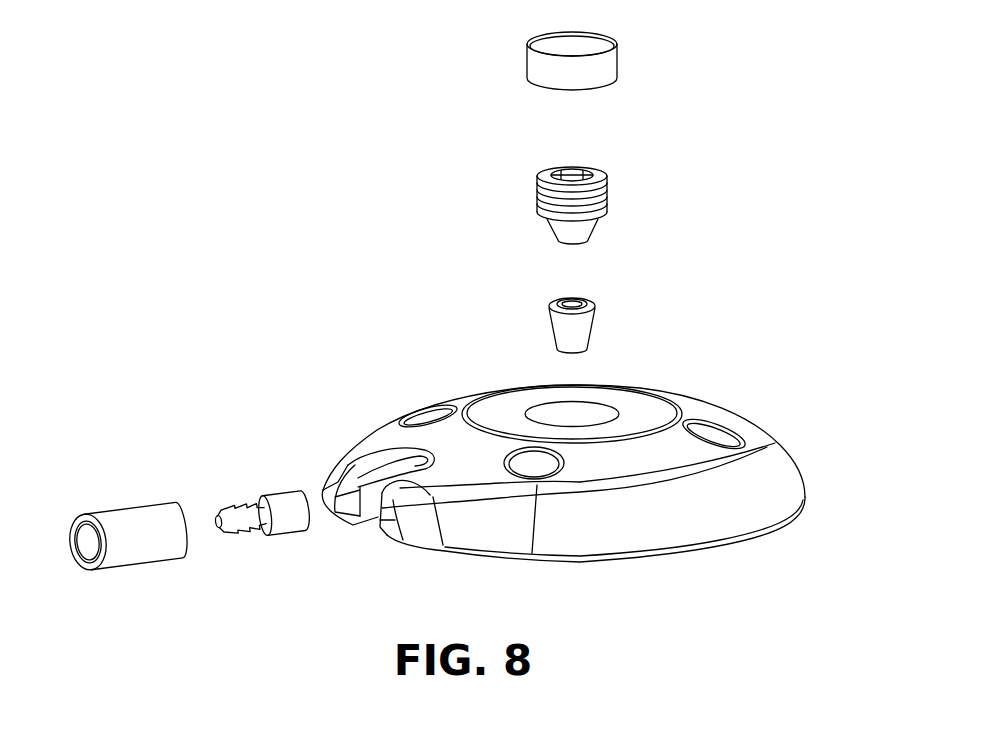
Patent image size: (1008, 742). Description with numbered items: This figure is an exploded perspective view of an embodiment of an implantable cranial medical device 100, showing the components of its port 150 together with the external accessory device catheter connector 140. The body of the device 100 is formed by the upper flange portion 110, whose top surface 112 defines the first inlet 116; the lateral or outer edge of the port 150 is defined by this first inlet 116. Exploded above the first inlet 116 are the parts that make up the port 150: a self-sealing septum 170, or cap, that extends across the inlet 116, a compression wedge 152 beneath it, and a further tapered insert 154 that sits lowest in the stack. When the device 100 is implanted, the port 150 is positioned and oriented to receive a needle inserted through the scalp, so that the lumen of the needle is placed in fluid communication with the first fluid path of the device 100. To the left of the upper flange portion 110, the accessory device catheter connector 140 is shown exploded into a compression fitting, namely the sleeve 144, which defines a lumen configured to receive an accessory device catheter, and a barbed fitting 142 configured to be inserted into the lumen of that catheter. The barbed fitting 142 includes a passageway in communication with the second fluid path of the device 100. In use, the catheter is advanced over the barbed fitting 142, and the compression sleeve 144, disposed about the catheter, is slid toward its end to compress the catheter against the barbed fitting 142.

The implantable medical device 100 is at (320, 323).
The upper flange portion 110 is at (778, 468).
The top surface 112 is at (475, 388).
The first inlet 116 is at (574, 415).
The accessory device catheter connector 140 is at (308, 472).
The barbed fitting 142 is at (296, 520).
The sleeve 144 is at (151, 553).
The port 150 is at (810, 3).
The compression wedge 152 is at (608, 200).
The tapered insert 154 is at (595, 320).
The septum 170 is at (618, 63).